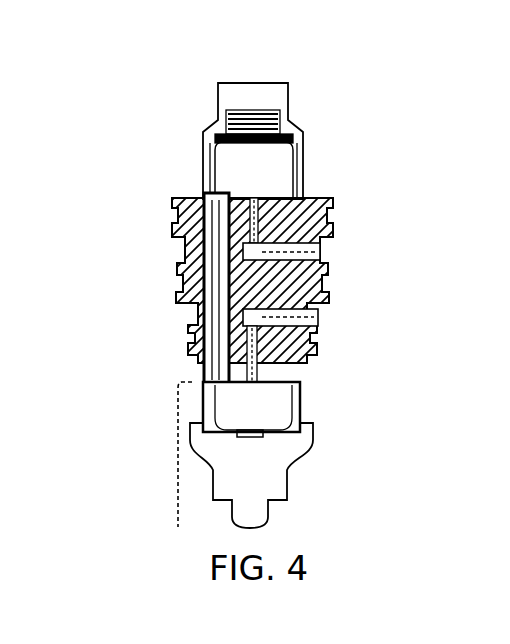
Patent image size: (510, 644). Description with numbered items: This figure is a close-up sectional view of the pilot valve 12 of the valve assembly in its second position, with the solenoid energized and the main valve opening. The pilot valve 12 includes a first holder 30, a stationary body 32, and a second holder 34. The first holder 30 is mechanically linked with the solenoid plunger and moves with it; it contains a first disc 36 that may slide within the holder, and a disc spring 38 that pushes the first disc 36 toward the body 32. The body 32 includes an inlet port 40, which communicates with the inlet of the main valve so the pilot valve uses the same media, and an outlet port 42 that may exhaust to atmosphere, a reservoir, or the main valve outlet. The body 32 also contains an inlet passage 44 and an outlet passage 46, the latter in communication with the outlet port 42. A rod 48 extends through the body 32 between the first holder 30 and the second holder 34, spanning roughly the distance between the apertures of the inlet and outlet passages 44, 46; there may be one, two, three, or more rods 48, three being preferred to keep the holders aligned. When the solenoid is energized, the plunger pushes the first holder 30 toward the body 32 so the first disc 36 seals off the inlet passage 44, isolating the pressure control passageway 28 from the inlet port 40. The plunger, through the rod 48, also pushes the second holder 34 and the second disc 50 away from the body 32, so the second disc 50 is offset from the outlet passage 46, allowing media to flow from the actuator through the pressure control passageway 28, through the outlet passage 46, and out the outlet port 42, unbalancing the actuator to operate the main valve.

The pilot valve 12 is at (98, 66).
The pressure control passageway 28 is at (177, 472).
The first holder 30 is at (253, 73).
The stationary body 32 is at (178, 266).
The second holder 34 is at (257, 467).
The first disc 36 is at (203, 178).
The disc spring 38 is at (280, 120).
The inlet port 40 is at (330, 250).
The outlet port 42 is at (330, 315).
The inlet passage 44 is at (293, 189).
The outlet passage 46 is at (250, 351).
The rod 48 is at (203, 302).
The second disc 50 is at (245, 400).